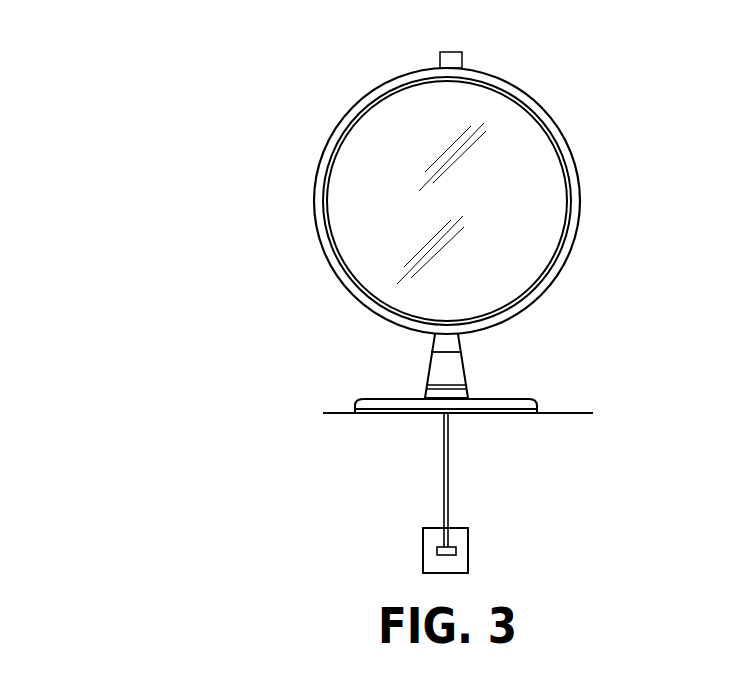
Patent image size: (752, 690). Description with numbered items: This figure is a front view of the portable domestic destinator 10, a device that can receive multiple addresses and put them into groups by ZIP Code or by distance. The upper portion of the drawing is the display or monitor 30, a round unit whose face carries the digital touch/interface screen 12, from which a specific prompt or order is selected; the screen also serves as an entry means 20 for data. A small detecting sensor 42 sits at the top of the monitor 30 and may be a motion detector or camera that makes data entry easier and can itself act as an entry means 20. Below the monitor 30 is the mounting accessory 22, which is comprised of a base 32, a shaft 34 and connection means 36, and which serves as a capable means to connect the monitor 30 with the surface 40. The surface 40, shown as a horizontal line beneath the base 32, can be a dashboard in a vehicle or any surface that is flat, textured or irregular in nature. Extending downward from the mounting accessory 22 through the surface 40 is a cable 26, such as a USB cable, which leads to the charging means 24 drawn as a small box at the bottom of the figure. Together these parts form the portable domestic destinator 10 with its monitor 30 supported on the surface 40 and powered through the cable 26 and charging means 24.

The domestic destinator 10 is at (85, 148).
The digital touch/interface screen 12 is at (535, 153).
The entry means 20 is at (518, 260).
The mounting accessory 22 is at (307, 387).
The charging means 24 is at (430, 562).
The cable 26 is at (450, 458).
The display or monitor 30 is at (338, 132).
The base 32 is at (503, 406).
The shaft 34 is at (445, 341).
The connection means 36 is at (390, 412).
The surface 40 is at (563, 414).
The detecting sensor 42 is at (452, 62).